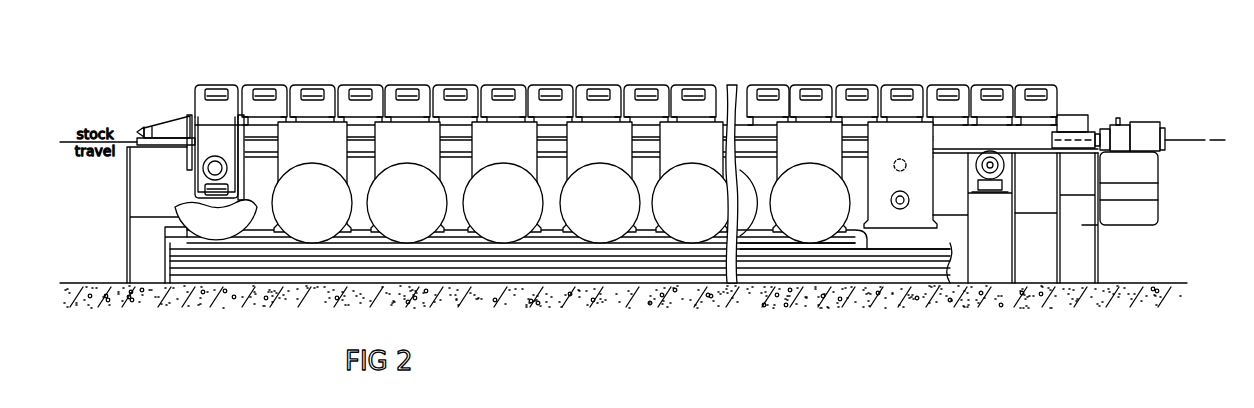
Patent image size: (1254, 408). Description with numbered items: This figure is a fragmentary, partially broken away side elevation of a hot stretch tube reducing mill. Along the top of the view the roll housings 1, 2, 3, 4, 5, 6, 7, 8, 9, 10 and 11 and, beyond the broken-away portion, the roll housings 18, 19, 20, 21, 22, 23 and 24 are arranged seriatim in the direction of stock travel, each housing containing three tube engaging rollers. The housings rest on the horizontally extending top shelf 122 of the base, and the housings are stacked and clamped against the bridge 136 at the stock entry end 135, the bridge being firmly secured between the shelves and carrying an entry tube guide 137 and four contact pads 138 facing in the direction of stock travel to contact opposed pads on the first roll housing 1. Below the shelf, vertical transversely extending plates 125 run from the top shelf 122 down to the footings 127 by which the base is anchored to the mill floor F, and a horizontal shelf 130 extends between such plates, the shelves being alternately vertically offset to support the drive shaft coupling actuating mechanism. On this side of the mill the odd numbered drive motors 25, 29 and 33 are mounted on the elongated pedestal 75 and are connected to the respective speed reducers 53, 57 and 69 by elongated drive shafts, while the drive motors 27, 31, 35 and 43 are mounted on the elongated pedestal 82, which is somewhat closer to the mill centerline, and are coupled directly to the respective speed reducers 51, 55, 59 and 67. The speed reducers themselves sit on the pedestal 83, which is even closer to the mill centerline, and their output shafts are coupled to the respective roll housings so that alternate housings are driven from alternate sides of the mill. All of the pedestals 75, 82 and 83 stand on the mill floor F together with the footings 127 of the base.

The roll housing 1 is at (234, 87).
The roll housing 2 is at (280, 87).
The roll housing 3 is at (328, 87).
The roll housing 4 is at (376, 87).
The roll housing 5 is at (423, 87).
The roll housing 6 is at (471, 87).
The roll housing 7 is at (519, 87).
The roll housing 8 is at (566, 87).
The roll housing 9 is at (614, 87).
The roll housing 10 is at (662, 87).
The roll housing 11 is at (709, 87).
The roll housing 18 is at (750, 88).
The roll housing 19 is at (794, 88).
The roll housing 20 is at (840, 88).
The roll housing 21 is at (885, 88).
The roll housing 22 is at (965, 88).
The roll housing 23 is at (1008, 88).
The roll housing 24 is at (1053, 88).
The drive motor 25 is at (215, 241).
The drive motor 27 is at (312, 244).
The drive motor 29 is at (407, 203).
The drive motor 31 is at (503, 203).
The drive motor 33 is at (600, 203).
The drive motor 35 is at (692, 203).
The drive motor 43 is at (810, 203).
The speed reducer 51 is at (312, 177).
The speed reducer 53 is at (407, 177).
The speed reducer 55 is at (504, 177).
The speed reducer 57 is at (599, 177).
The speed reducer 59 is at (691, 177).
The speed reducer 67 is at (809, 177).
The speed reducer 69 is at (900, 175).
The elongated pedestal 75 is at (553, 284).
The elongated pedestal 82 is at (797, 284).
The pedestal 83 is at (893, 284).
The top shelf 122 is at (190, 152).
The vertical transversely extending plates 125 is at (1003, 268).
The footings 127 is at (1042, 281).
The horizontal shelf 130 is at (993, 194).
The stock entry end 135 is at (127, 163).
The bridge 136 is at (161, 128).
The entry tube guide 137 is at (139, 130).
The contact pads 138 is at (189, 112).
The mill floor F is at (1153, 282).